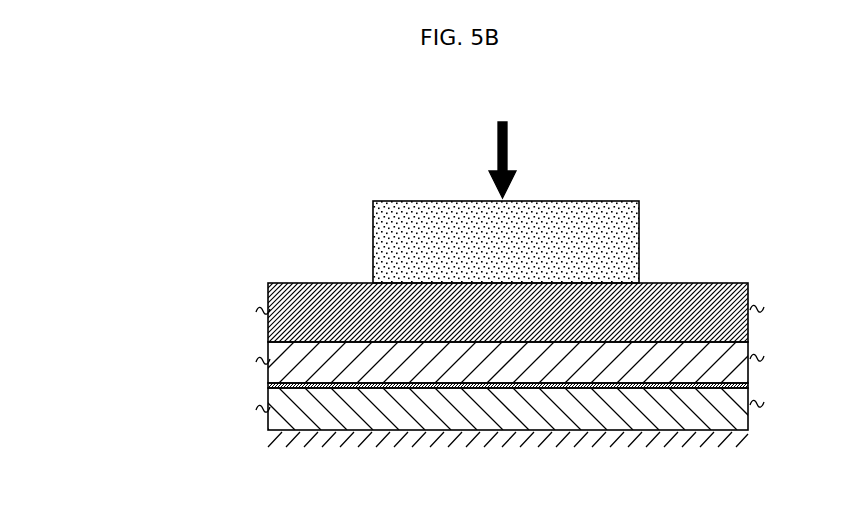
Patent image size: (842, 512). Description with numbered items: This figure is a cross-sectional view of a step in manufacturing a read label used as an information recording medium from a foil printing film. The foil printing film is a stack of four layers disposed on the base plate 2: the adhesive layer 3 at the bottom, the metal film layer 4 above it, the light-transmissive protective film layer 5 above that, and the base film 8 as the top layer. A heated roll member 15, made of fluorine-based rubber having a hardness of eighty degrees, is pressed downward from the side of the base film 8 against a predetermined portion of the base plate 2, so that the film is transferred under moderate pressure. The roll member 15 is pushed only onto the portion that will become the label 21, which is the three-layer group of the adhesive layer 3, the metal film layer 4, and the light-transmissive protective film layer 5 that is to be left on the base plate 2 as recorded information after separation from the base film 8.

The heated roll member 15 is at (387, 258).
The base film 8 is at (272, 302).
The label 21 is at (172, 287).
The light-transmissive protective film layer 5 is at (273, 352).
The metal film layer 4 is at (273, 385).
The adhesive layer 3 is at (273, 405).
The base plate 2 is at (272, 441).